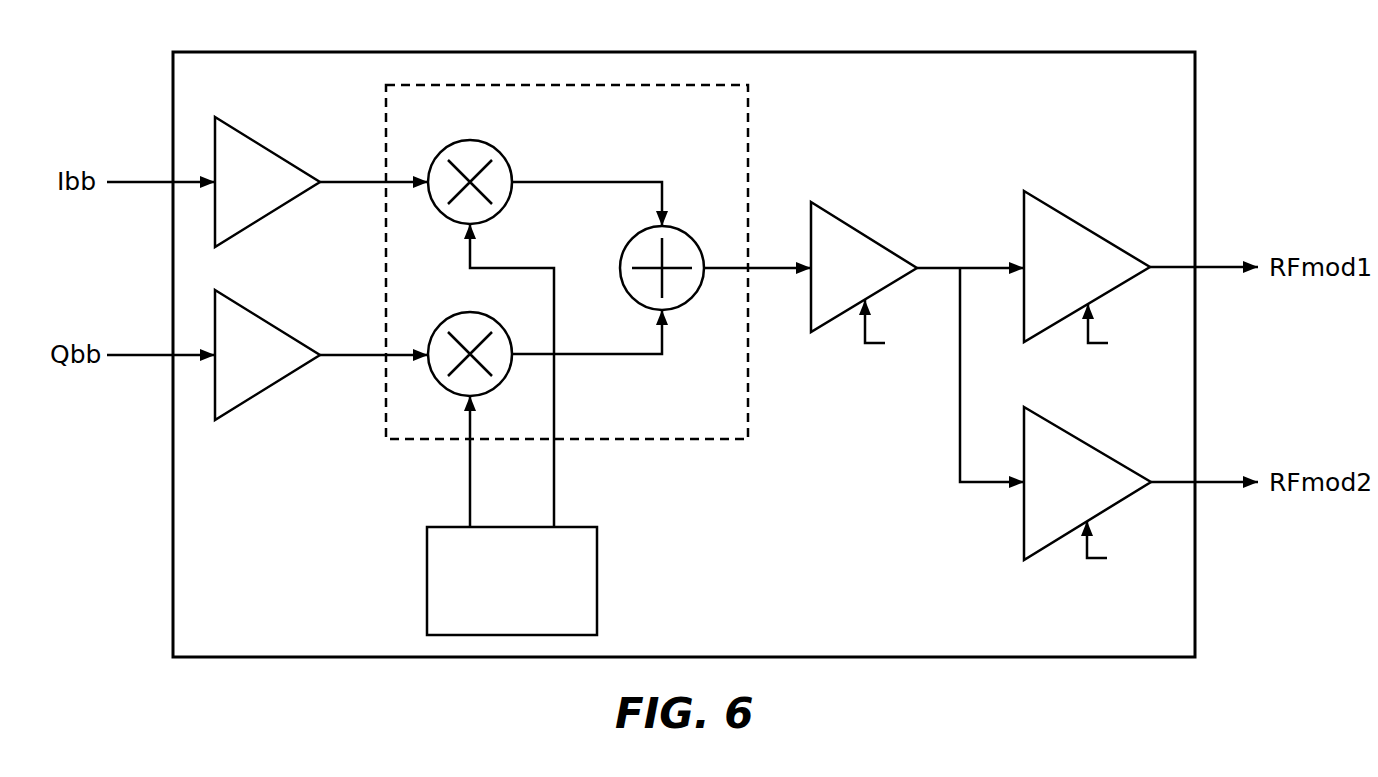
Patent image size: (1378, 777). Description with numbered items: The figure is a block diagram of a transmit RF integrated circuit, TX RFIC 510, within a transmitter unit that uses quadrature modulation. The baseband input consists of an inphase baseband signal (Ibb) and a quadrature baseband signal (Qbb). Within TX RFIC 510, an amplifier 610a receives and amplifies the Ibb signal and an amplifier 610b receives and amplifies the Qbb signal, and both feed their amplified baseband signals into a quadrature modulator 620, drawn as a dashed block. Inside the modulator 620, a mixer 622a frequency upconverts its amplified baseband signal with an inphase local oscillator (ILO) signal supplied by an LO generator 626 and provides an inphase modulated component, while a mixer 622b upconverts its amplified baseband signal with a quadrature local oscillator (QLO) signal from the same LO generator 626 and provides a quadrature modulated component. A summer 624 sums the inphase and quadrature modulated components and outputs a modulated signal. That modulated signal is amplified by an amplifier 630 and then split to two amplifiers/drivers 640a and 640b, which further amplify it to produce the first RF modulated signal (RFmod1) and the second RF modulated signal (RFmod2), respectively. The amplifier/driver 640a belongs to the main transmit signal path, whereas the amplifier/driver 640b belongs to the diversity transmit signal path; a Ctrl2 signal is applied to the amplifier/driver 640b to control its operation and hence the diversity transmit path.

The TX RFIC 510 is at (656, 52).
The amplifier 610a is at (272, 152).
The amplifier 610b is at (272, 325).
The quadrature modulator 620 is at (750, 136).
The mixer 622a is at (462, 141).
The mixer 622b is at (440, 314).
The summer 624 is at (690, 233).
The LO generator 626 is at (496, 527).
The amplifier 630 is at (870, 236).
The amplifier/driver 640a is at (1080, 225).
The amplifier/driver 640b is at (1082, 443).